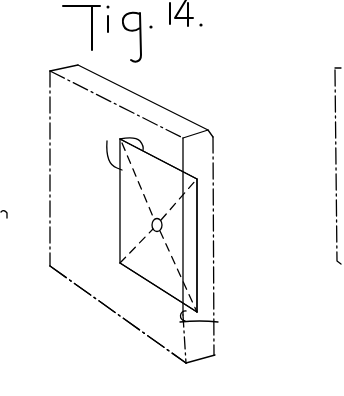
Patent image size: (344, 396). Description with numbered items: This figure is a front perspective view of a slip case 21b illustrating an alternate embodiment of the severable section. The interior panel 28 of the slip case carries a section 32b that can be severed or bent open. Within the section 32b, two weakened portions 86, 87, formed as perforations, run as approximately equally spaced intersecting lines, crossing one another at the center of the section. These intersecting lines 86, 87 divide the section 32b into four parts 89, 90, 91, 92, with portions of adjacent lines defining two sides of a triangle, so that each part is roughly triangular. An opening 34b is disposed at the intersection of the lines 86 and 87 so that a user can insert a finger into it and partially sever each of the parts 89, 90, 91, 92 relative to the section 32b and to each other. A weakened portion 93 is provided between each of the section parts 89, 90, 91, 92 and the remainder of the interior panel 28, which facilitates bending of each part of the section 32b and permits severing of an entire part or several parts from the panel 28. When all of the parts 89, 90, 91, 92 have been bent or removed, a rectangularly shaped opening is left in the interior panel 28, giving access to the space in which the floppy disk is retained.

The slip case 21b is at (190, 116).
The interior panel 28 is at (197, 150).
The section part 91 is at (165, 170).
The opening 34b is at (163, 222).
The section part 92 is at (172, 242).
The weakened portion 87 is at (172, 273).
The weakened portion 93 is at (120, 138).
The section part 90 is at (138, 215).
The weakened portion 86 is at (140, 244).
The section part 89 is at (160, 268).
The section 32b is at (136, 280).